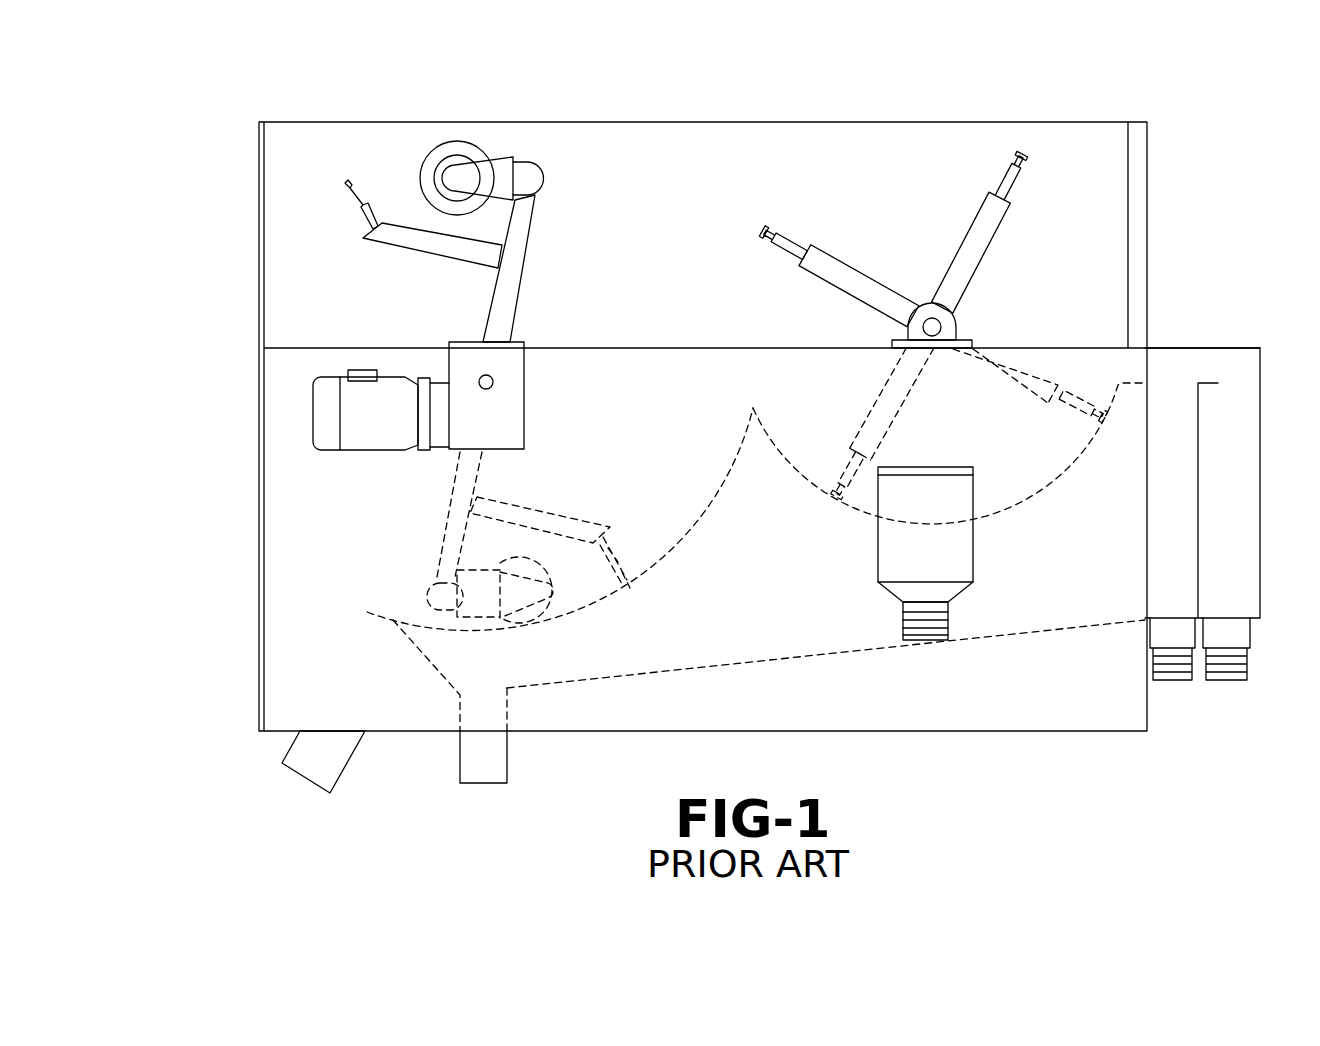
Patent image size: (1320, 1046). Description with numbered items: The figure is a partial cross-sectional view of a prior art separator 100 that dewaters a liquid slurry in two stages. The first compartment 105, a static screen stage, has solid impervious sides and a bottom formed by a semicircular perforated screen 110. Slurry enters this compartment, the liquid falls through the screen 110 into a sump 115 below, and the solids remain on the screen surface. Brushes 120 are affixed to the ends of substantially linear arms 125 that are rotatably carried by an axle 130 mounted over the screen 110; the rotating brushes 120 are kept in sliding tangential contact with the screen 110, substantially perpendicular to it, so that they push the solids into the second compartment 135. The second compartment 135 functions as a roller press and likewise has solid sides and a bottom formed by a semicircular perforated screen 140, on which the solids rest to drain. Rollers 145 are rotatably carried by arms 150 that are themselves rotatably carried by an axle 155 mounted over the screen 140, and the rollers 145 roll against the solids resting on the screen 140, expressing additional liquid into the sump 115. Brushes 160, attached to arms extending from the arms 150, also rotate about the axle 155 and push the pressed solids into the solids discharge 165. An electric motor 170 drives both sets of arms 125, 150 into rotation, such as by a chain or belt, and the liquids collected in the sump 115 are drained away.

The prior art separator 100 is at (200, 162).
The first compartment 105 is at (965, 404).
The semicircular perforated screen 110 is at (1013, 503).
The sump 115 is at (728, 665).
The brushes 120 is at (780, 227).
The substantially linear arms 125 is at (858, 277).
The axle 130 is at (953, 323).
The second compartment 135 is at (618, 433).
The semicircular perforated screen 140 is at (592, 610).
The rollers 145 is at (477, 153).
The arms 150 is at (518, 248).
The axle 155 is at (479, 378).
The brushes 160 is at (357, 196).
The solids discharge 165 is at (303, 780).
The electric motor 170 is at (313, 413).